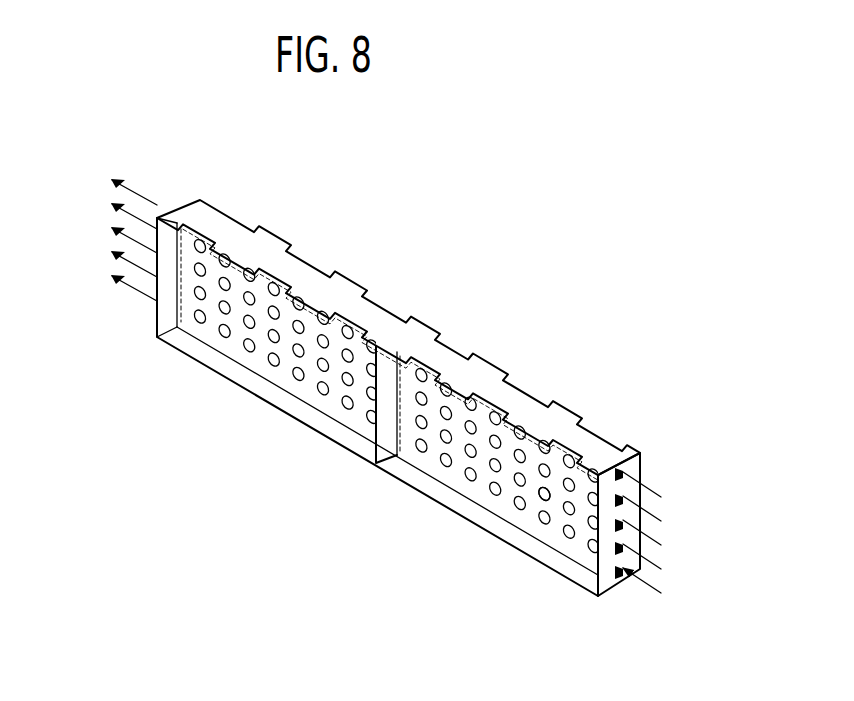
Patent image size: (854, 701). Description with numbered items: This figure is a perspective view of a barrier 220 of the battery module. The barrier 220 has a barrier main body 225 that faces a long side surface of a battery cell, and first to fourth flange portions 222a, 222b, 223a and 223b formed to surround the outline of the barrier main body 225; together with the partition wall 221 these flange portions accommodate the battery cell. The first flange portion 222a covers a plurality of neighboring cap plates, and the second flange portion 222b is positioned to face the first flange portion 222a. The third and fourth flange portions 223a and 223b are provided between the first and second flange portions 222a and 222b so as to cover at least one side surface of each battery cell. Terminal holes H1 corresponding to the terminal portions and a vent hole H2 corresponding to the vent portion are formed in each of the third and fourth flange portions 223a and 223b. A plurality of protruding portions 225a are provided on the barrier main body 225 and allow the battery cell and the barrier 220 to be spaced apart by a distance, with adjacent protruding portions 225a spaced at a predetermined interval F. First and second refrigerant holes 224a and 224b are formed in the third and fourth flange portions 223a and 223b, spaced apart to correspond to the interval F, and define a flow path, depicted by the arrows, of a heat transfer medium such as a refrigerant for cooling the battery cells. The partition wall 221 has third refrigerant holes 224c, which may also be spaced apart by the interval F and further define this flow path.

The barrier 220 is at (283, 220).
The partition wall 221 is at (382, 376).
The first flange portion 222a is at (195, 203).
The second flange portion 222b is at (214, 368).
The third flange portion 223a is at (637, 503).
The fourth flange portion 223b is at (157, 326).
The first refrigerant holes 224a is at (630, 474).
The second refrigerant holes 224b is at (170, 298).
The third refrigerant holes 224c is at (401, 440).
The barrier main body 225 is at (553, 528).
The protruding portions 225a is at (585, 546).
The terminal holes H1 is at (234, 212).
The vent hole H2 is at (301, 256).
The interval F is at (536, 500).